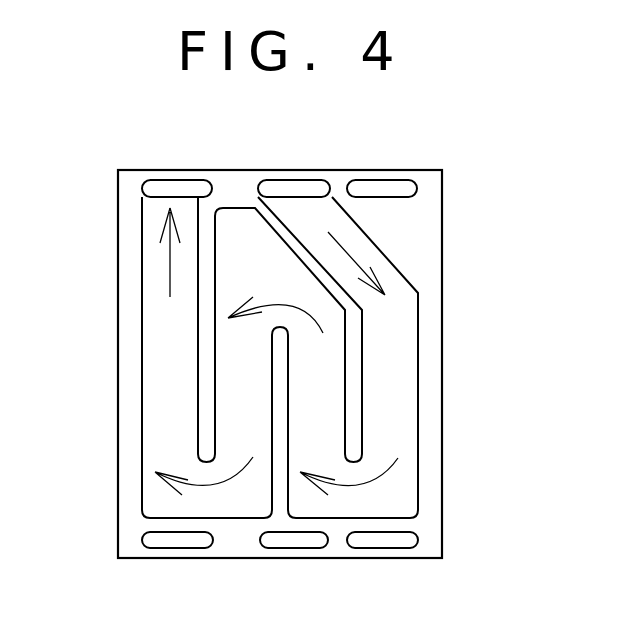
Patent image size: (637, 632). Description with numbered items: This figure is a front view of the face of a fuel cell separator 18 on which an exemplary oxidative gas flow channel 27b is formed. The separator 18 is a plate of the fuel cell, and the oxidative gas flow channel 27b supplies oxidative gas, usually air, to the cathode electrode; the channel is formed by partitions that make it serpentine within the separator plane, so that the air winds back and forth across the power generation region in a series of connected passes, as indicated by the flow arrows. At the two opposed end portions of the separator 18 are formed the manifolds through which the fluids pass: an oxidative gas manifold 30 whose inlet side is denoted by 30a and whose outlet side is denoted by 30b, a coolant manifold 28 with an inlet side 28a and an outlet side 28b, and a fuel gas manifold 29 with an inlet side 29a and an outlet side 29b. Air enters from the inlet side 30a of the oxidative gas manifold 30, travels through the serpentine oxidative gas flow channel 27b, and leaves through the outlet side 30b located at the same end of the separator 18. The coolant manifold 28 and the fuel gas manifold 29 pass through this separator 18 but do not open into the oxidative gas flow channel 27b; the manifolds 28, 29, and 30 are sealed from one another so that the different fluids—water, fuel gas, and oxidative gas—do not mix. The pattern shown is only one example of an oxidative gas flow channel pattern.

The separator 18 is at (443, 225).
The oxidative gas flow channel 27b is at (418, 370).
The coolant manifold 28 is at (375, 365).
The coolant manifold inlet side 28a is at (293, 540).
The coolant manifold outlet side 28b is at (400, 189).
The fuel gas manifold 29 is at (305, 571).
The fuel gas manifold inlet side 29a is at (397, 540).
The fuel gas manifold outlet side 29b is at (172, 540).
The oxidative gas manifold 30 is at (239, 158).
The oxidative gas manifold inlet side 30a is at (293, 188).
The oxidative gas manifold outlet side 30b is at (172, 187).